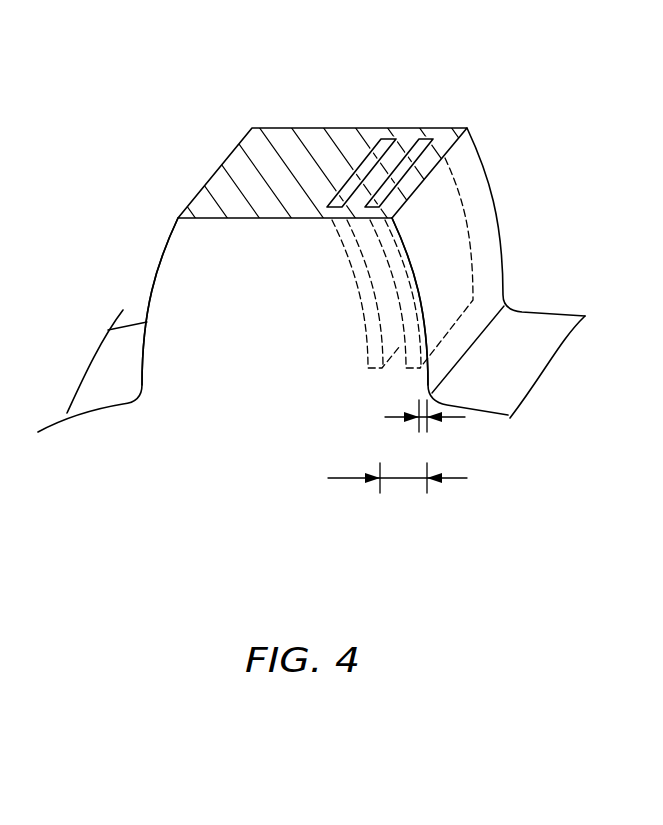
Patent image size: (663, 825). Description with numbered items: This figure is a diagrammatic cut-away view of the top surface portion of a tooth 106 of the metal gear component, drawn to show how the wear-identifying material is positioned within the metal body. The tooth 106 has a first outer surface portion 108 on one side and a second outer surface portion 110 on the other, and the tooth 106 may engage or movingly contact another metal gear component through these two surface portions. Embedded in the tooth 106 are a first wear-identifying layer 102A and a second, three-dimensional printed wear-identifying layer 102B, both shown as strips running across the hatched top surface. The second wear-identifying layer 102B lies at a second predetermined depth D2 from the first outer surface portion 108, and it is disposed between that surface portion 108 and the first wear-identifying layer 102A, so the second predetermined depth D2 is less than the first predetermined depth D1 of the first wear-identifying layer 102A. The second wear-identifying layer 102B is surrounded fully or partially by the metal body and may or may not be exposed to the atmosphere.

The tooth 106 is at (183, 104).
The first wear-identifying layer 102A is at (373, 142).
The second wear-identifying layer 102B is at (427, 137).
The first outer surface portion 108 is at (472, 270).
The second outer surface portion 110 is at (157, 282).
The first predetermined depth D1 is at (395, 478).
The second predetermined depth D2 is at (453, 417).